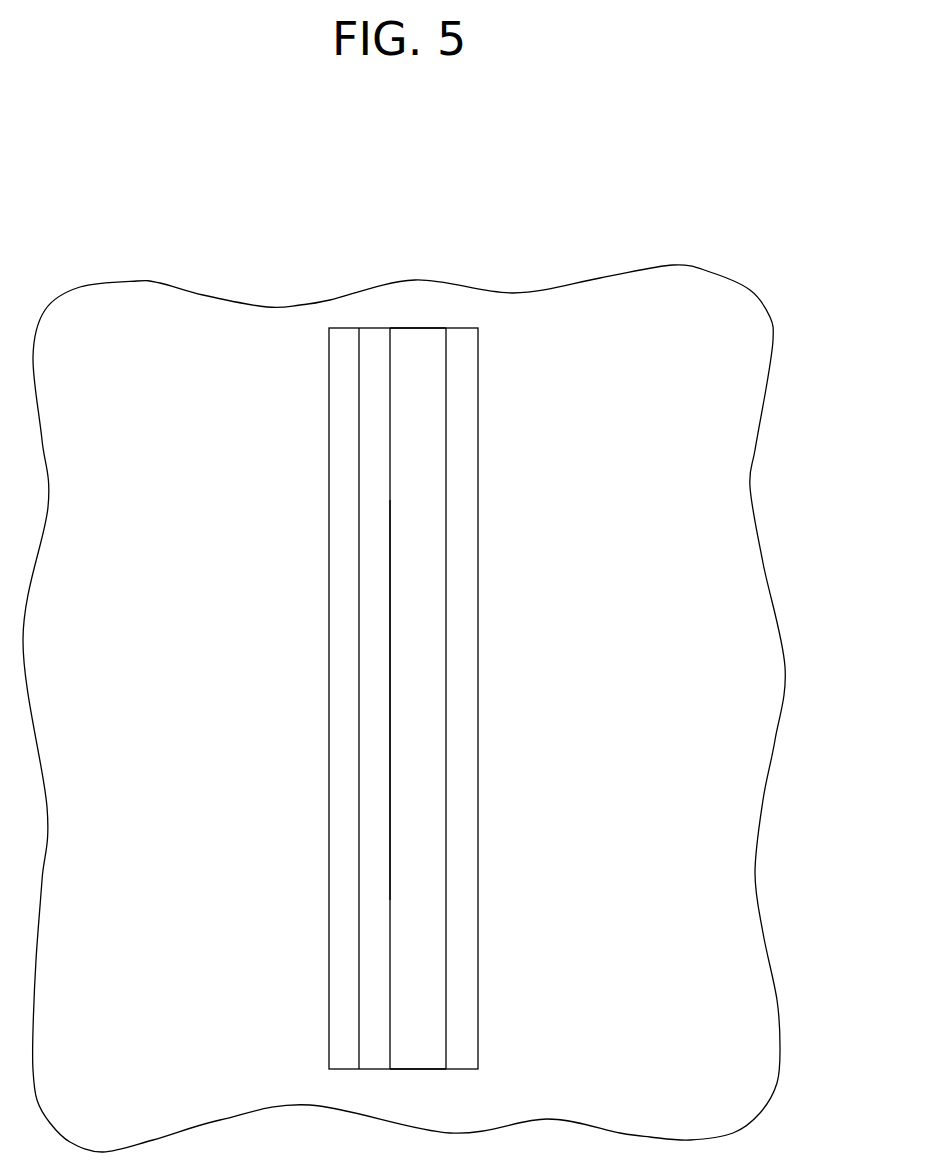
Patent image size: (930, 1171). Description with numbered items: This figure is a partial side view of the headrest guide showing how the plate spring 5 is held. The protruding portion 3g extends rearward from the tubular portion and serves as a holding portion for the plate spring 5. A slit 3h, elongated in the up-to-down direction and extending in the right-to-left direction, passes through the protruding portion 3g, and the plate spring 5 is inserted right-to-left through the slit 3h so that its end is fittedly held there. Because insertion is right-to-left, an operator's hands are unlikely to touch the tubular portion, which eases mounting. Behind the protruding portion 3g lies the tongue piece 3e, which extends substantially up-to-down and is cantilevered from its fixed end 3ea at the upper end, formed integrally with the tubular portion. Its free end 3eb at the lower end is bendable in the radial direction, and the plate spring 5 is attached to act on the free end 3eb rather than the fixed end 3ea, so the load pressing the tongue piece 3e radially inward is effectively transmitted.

The protruding portion 3g is at (722, 602).
The slit 3h is at (328, 565).
The plate spring 5 is at (373, 657).
The tongue piece 3e is at (428, 703).
The fixed end 3ea is at (425, 387).
The free end 3eb is at (425, 1022).